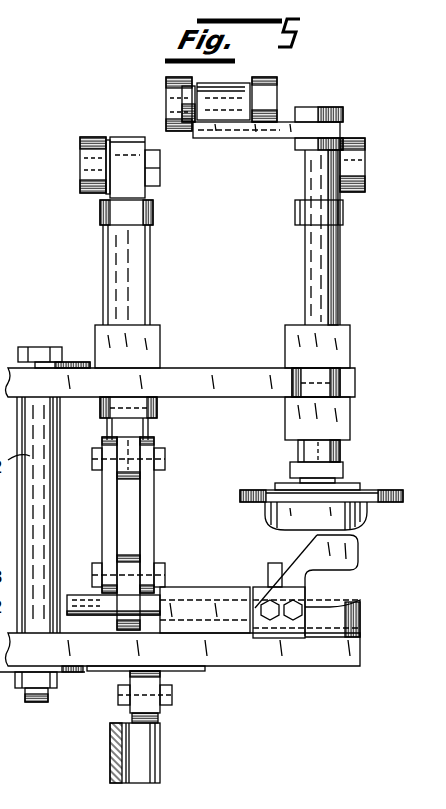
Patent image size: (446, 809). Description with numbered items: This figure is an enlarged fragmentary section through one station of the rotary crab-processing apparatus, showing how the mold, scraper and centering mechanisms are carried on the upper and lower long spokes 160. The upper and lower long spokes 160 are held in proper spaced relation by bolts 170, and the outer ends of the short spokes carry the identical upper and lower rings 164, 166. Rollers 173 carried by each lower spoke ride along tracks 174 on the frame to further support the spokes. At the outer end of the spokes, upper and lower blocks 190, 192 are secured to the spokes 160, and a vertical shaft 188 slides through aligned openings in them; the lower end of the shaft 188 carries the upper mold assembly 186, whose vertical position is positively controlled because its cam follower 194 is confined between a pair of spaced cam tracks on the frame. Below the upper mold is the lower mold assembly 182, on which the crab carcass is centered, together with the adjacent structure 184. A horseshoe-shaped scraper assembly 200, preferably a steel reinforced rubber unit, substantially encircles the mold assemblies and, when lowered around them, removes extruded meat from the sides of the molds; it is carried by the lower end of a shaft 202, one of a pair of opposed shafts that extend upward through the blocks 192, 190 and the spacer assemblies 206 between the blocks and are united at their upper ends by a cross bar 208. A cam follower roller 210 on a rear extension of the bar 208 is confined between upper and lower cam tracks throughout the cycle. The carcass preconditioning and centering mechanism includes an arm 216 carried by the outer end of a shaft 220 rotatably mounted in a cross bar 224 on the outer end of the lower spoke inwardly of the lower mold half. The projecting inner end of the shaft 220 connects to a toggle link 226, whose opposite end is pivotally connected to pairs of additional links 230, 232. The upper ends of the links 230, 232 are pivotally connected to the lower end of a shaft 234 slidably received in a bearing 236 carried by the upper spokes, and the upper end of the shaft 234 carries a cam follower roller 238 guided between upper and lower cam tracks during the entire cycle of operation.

The long spokes 160 is at (226, 376).
The upper ring 164 is at (72, 360).
The lower ring 166 is at (70, 673).
The bolts 170 is at (38, 353).
The rollers 173 is at (165, 713).
The tracks 174 is at (162, 758).
The lower mold assembly 182 is at (361, 607).
The arm 184 is at (365, 638).
The upper mold assembly 186 is at (350, 512).
The vertical shaft 188 is at (300, 276).
The upper block 190 is at (340, 347).
The lower block 192 is at (338, 418).
The cam follower 194 is at (355, 165).
The scraper assembly 200 is at (264, 496).
The shaft 202 is at (326, 275).
The spacer assemblies 206 is at (341, 381).
The cross bar 208 is at (237, 134).
The cam follower roller 210 is at (168, 108).
The arm 216 is at (346, 553).
The shaft 220 is at (256, 582).
The cross bar 224 is at (186, 592).
The toggle link 226 is at (128, 576).
The links 230 is at (156, 515).
The links 232 is at (108, 502).
The shaft 234 is at (136, 424).
The bearing 236 is at (148, 348).
The cam follower roller 238 is at (88, 170).